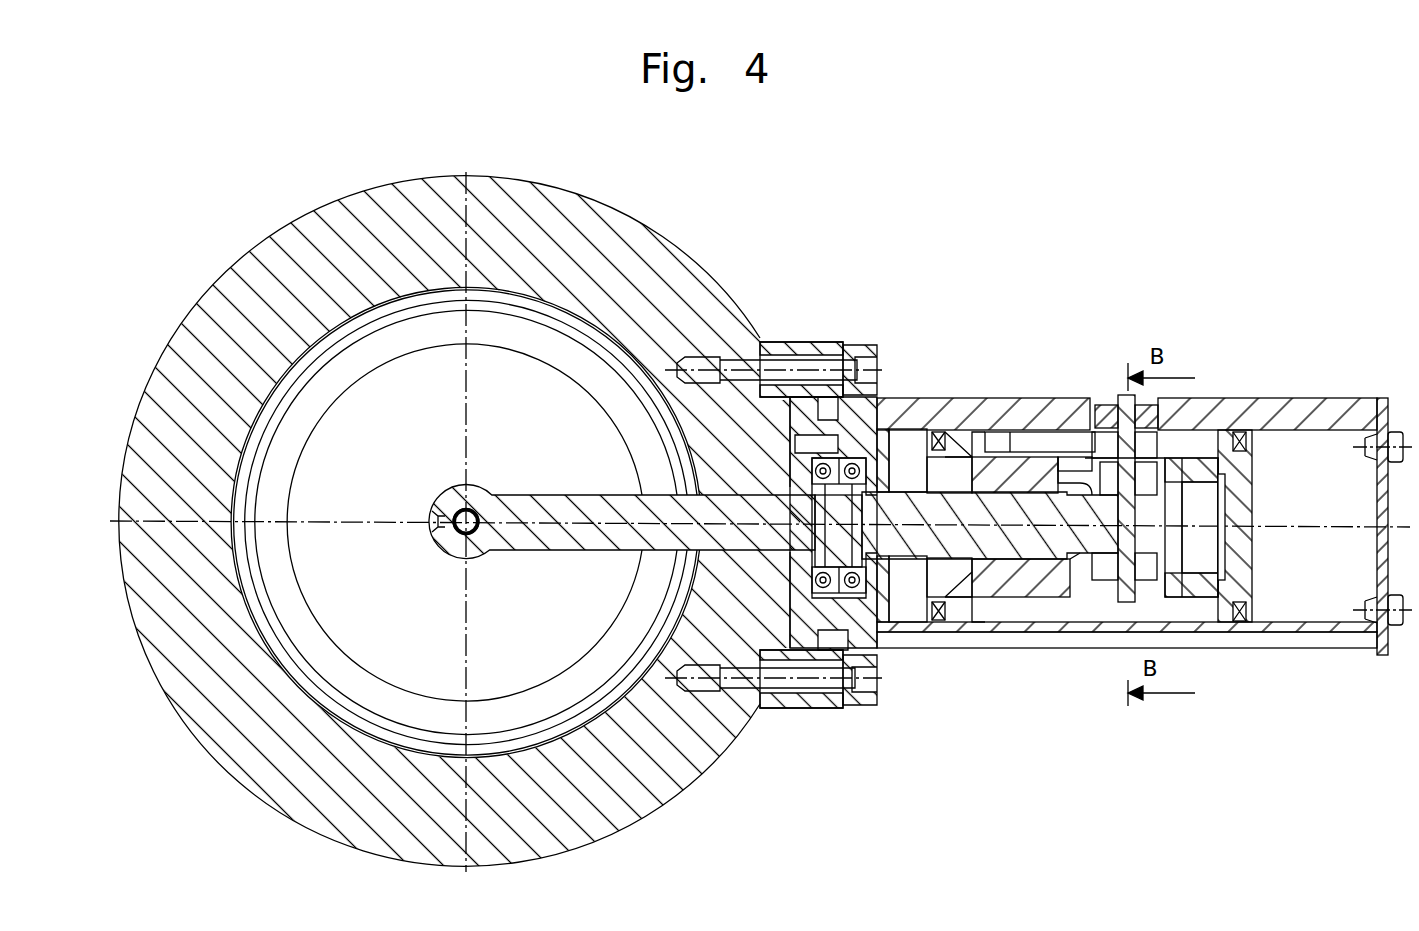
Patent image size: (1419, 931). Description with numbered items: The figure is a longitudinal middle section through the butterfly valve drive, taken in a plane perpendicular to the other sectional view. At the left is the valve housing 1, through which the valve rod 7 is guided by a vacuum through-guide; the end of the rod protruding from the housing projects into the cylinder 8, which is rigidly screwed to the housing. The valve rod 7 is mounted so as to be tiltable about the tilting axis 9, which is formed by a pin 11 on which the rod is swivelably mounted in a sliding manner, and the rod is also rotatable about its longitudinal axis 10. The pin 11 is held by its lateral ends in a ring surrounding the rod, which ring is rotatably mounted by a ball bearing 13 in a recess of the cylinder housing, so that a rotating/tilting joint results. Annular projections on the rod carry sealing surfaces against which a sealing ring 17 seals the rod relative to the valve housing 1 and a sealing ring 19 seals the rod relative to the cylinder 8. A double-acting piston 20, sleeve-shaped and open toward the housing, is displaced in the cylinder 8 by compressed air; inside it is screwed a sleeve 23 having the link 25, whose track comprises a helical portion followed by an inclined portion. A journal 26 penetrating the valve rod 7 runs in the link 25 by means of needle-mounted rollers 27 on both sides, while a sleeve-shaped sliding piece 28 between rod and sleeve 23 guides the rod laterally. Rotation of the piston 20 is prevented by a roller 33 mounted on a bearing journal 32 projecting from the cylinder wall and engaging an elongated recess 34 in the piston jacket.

The valve housing 1 is at (513, 222).
The valve rod 7 is at (945, 548).
The cylinder 8 is at (1297, 423).
The tilting axis 9 is at (870, 528).
The longitudinal axis 10 is at (558, 522).
The pin 11 is at (863, 525).
The ball bearing 13 is at (822, 596).
The sealing ring 17 is at (812, 345).
The sealing ring 19 is at (866, 470).
The piston 20 is at (1242, 567).
The sleeve 23 is at (1000, 590).
The link 25 is at (1070, 470).
The journal 26 is at (1077, 557).
The needle-mounted rollers 27 is at (1110, 582).
The sleeve-shaped sliding piece 28 is at (1087, 480).
The bearing journal 32 is at (1133, 430).
The roller 33 is at (1163, 430).
The elongated recess 34 is at (1037, 443).